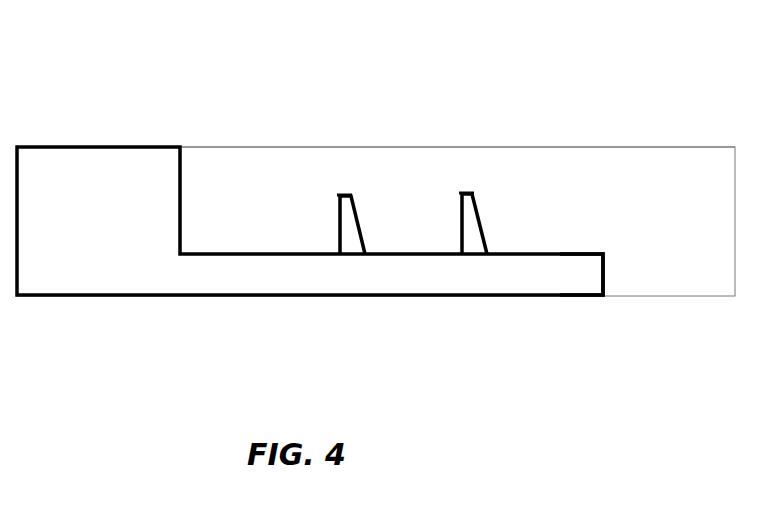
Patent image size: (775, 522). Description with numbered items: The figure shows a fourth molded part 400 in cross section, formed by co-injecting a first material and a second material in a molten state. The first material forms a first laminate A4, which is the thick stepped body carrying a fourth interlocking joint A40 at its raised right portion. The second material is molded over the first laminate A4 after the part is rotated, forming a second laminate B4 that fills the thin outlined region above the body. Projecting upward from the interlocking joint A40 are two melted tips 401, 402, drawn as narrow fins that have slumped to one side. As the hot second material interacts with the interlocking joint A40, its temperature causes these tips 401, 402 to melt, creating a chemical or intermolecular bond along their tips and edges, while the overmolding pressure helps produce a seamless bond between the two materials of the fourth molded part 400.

The fourth molded part 400 is at (636, 79).
The first laminate A4 is at (74, 163).
The second laminate B4 is at (434, 150).
The fourth interlocking joint A40 is at (601, 241).
The melted tip 401 is at (338, 222).
The melted tip 402 is at (461, 222).